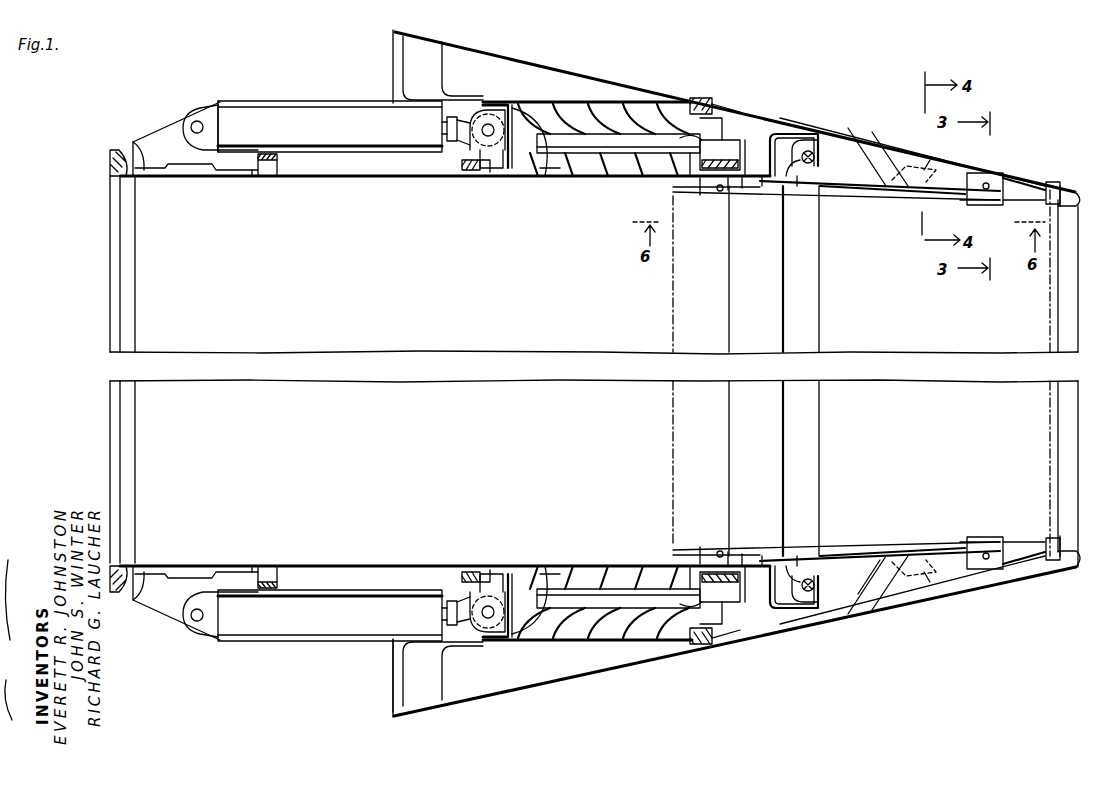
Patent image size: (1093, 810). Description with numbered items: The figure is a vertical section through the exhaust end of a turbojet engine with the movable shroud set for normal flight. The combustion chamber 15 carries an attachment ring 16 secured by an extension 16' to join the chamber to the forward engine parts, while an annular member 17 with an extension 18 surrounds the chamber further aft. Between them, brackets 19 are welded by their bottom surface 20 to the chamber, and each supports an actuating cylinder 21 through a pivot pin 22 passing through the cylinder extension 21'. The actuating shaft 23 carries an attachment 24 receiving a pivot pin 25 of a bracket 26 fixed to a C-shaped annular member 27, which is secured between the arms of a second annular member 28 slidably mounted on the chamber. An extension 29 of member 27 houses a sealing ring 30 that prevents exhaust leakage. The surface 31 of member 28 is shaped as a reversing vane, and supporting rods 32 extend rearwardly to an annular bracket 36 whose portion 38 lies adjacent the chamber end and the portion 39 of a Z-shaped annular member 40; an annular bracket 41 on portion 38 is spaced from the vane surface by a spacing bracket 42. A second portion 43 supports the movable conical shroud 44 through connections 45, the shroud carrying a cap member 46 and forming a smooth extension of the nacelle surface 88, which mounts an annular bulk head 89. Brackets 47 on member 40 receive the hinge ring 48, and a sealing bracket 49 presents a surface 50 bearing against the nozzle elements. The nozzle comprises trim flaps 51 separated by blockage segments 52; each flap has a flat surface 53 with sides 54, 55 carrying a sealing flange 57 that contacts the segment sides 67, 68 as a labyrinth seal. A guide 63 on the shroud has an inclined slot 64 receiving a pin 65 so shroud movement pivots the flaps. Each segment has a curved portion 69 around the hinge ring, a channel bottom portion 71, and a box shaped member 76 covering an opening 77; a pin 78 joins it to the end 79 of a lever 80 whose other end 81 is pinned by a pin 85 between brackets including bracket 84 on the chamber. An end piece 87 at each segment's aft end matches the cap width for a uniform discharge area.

The combustion chamber 15 is at (336, 180).
The attachment ring 16 is at (114, 357).
The extension 16' is at (139, 348).
The annular member 17 is at (268, 180).
The extension 18 is at (250, 178).
The bracket 19 is at (160, 138).
The bottom surface 20 is at (192, 180).
The actuating cylinder 21 is at (330, 372).
The extension 21' is at (210, 373).
The pivot pin 22 is at (193, 122).
The actuating shaft 23 is at (446, 126).
The attachment 24 is at (470, 133).
The pivot pin 25 is at (490, 122).
The bracket 26 is at (500, 180).
The annular member 27 is at (540, 176).
The second annular member 28 is at (550, 180).
The extension 29 is at (458, 180).
The sealing ring 30 is at (470, 182).
The surface 31 is at (514, 640).
The supporting rod 32 is at (612, 155).
The flat surface 53 is at (558, 108).
The side 54 is at (605, 115).
The side 55 is at (640, 110).
The annular bracket 36 is at (698, 128).
The portion 38 is at (706, 190).
The portion 39 is at (743, 165).
The Z-shaped annular member 40 is at (767, 136).
The annular bracket 41 is at (735, 150).
The spacing bracket 42 is at (680, 135).
The second portion 43 is at (716, 106).
The movable conical shroud 44 is at (795, 122).
The connection 45 is at (693, 100).
The cap member 46 is at (1068, 188).
The bracket 47 is at (815, 140).
The hinge ring 48 is at (815, 158).
The sealing bracket 49 is at (762, 189).
The surface 50 is at (784, 460).
The trim flap 51 is at (525, 104).
The blockage segment 52 is at (900, 196).
The sealing flange 57 is at (672, 178).
The guide 63 is at (886, 148).
The inclined slot 64 is at (905, 158).
The pin 65 is at (930, 165).
The side 67 is at (852, 145).
The side 68 is at (860, 602).
The curved portion 69 is at (797, 188).
The bottom portion 71 is at (835, 192).
The box shaped member 76 is at (997, 176).
The opening 77 is at (970, 202).
The pin 78 is at (986, 176).
The end 79 is at (1015, 224).
The lever 80 is at (880, 202).
The end 81 is at (744, 190).
The bracket 84 is at (696, 185).
The pin 85 is at (718, 205).
The end piece 87 is at (1050, 185).
The nacelle surface 88 is at (590, 76).
The annular bulk head 89 is at (445, 77).